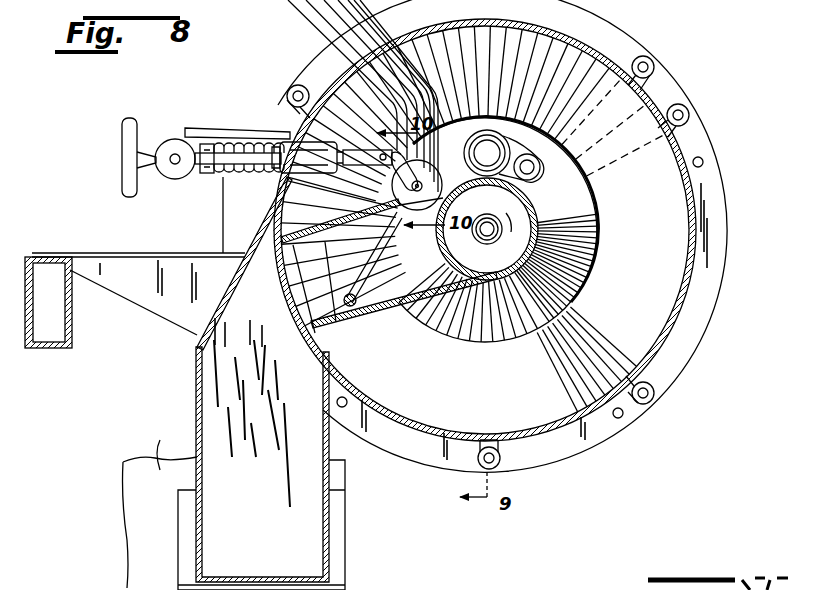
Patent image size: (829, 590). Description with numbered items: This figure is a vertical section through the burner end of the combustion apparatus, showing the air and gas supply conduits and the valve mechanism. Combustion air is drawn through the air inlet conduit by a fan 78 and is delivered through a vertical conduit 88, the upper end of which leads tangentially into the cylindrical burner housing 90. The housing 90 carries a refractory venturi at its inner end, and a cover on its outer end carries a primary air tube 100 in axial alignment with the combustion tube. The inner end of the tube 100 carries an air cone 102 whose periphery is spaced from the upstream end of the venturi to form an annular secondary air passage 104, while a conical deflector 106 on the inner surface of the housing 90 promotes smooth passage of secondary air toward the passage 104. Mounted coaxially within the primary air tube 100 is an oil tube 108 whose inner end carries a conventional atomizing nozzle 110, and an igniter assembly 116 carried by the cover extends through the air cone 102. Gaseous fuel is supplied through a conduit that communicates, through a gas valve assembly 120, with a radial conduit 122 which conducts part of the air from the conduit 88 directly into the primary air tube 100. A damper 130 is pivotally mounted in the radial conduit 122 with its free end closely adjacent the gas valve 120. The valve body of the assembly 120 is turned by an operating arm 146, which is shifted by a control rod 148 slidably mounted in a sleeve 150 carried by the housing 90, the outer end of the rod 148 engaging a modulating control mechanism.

The fan 78 is at (160, 510).
The vertical conduit 88 is at (196, 418).
The burner housing 90 is at (542, 34).
The primary air tube 100 is at (532, 218).
The air cone 102 is at (578, 279).
The annular secondary air passage 104 is at (590, 190).
The conical deflector 106 is at (580, 56).
The oil tube 108 is at (500, 210).
The atomizing nozzle 110 is at (487, 240).
The igniter assembly 116 is at (509, 125).
The gas valve assembly 120 is at (389, 188).
The radial conduit 122 is at (377, 311).
The damper 130 is at (408, 263).
The operating arm 146 is at (413, 162).
The control rod 148 is at (347, 144).
The sleeve 150 is at (290, 137).